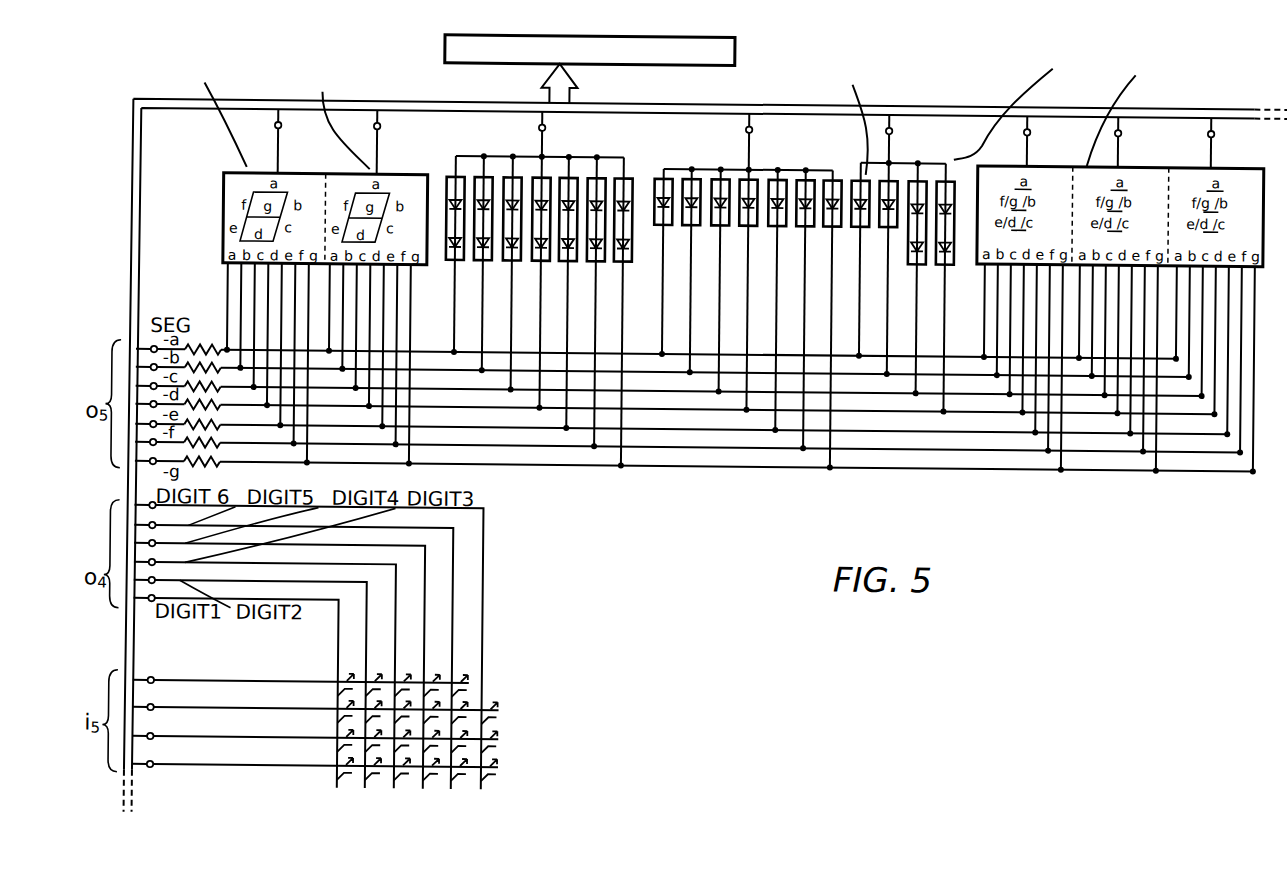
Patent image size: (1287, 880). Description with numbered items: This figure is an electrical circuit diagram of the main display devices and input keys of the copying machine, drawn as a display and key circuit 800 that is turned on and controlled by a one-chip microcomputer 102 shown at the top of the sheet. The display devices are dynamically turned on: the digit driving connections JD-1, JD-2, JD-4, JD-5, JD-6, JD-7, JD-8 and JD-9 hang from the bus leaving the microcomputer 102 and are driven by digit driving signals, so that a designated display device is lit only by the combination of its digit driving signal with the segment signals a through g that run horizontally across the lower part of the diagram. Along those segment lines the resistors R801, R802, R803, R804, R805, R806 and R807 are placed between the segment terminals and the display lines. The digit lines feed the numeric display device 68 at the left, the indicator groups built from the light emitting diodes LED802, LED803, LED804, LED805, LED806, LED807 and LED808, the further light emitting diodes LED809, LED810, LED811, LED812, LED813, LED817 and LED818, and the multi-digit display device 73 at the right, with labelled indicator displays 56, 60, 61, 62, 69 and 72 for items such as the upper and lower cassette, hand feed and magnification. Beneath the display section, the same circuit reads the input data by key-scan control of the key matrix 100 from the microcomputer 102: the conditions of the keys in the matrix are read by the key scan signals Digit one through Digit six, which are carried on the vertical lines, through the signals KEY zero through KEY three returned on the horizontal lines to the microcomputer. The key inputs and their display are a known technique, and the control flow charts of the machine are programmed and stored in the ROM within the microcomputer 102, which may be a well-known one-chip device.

The display and key input unit 800 is at (452, 94).
The microcomputer 102 is at (589, 70).
The copy number display 68 is at (232, 191).
The paper size indicator 56 is at (555, 158).
The paper size indicator 60 is at (660, 168).
The manual magnification indicator 61 is at (806, 164).
The 1:1 magnification indicator 62 is at (833, 164).
The hand feed indicator 69 is at (944, 158).
The upper cassette indicator 72 is at (878, 150).
The magnification factor display 73 is at (1262, 194).
The key matrix 100 is at (530, 718).
The digit driving connection JD-1 is at (256, 141).
The digit driving connection JD-2 is at (355, 142).
The digit driving connection JD-4 is at (886, 120).
The digit driving connection JD-5 is at (539, 121).
The digit driving connection JD-6 is at (746, 120).
The digit driving connection JD-7 is at (1050, 141).
The digit driving connection JD-8 is at (1141, 142).
The digit driving connection JD-9 is at (1234, 143).
The light emitting diode LED802 is at (443, 146).
The light emitting diode LED803 is at (465, 132).
The light emitting diode LED804 is at (492, 140).
The light emitting diode LED805 is at (530, 150).
The light emitting diode LED806 is at (565, 150).
The light emitting diode LED807 is at (595, 135).
The light emitting diode LED808 is at (612, 154).
The light emitting diode LED809 is at (661, 136).
The light emitting diode LED810 is at (694, 136).
The light emitting diode LED811 is at (727, 136).
The light emitting diode LED812 is at (762, 62).
The light emitting diode LED813 is at (776, 137).
The light emitting diode LED817 is at (927, 72).
The light emitting diode LED818 is at (932, 165).
The resistor R801 is at (188, 347).
The resistor R802 is at (190, 365).
The resistor R803 is at (190, 384).
The resistor R804 is at (190, 402).
The resistor R805 is at (220, 427).
The resistor R806 is at (220, 446).
The resistor R807 is at (196, 465).